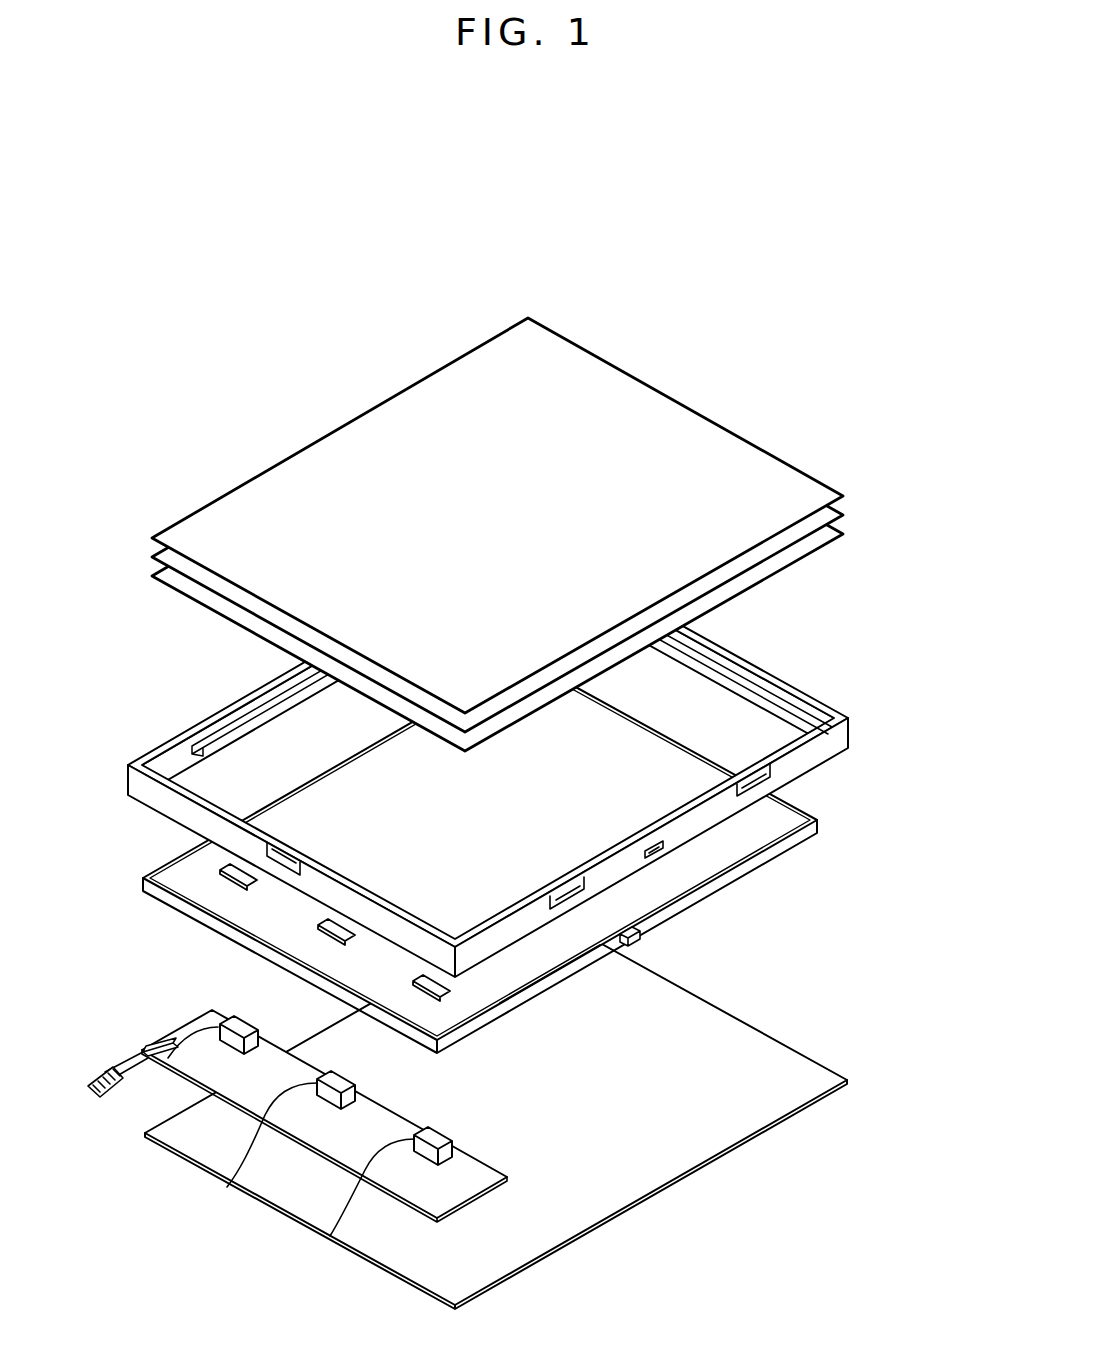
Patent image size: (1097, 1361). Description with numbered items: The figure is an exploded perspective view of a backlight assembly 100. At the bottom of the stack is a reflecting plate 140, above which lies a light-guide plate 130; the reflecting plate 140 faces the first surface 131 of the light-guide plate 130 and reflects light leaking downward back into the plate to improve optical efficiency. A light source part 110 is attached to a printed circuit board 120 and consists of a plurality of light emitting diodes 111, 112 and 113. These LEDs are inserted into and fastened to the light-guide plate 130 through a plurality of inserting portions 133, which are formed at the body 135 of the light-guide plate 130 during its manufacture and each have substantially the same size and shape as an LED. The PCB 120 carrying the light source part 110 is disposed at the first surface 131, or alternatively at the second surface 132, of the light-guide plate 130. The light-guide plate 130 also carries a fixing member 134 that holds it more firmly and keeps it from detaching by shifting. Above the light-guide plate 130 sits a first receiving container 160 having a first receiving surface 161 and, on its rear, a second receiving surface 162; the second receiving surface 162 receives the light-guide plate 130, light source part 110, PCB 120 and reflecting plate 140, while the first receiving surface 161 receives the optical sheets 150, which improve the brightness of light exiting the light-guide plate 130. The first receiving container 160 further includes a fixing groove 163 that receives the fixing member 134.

The backlight assembly 100 is at (485, 232).
The light source part 110 is at (307, 1148).
The light emitting diode 111 is at (332, 1236).
The light emitting diode 112 is at (230, 1177).
The light emitting diode 113 is at (120, 1096).
The printed circuit board 120 is at (470, 1173).
The light-guide plate 130 is at (556, 855).
The first surface 131 is at (807, 843).
The second surface 132 is at (807, 817).
The inserting portions 133 is at (452, 983).
The fixing member 134 is at (638, 938).
The body 135 is at (563, 948).
The reflecting plate 140 is at (805, 1072).
The optical sheets 150 is at (848, 495).
The first receiving container 160 is at (548, 756).
The first receiving surface 161 is at (793, 712).
The second receiving surface 162 is at (846, 728).
The fixing groove 163 is at (665, 858).